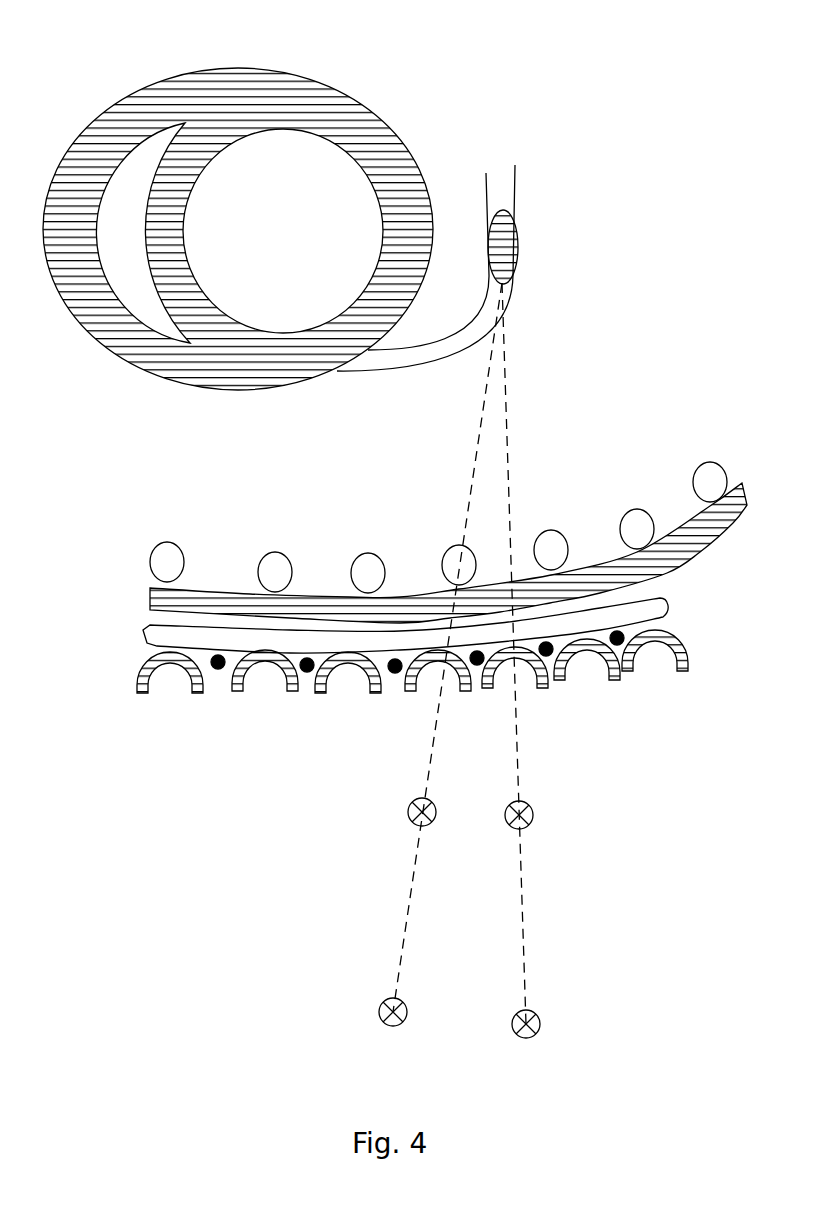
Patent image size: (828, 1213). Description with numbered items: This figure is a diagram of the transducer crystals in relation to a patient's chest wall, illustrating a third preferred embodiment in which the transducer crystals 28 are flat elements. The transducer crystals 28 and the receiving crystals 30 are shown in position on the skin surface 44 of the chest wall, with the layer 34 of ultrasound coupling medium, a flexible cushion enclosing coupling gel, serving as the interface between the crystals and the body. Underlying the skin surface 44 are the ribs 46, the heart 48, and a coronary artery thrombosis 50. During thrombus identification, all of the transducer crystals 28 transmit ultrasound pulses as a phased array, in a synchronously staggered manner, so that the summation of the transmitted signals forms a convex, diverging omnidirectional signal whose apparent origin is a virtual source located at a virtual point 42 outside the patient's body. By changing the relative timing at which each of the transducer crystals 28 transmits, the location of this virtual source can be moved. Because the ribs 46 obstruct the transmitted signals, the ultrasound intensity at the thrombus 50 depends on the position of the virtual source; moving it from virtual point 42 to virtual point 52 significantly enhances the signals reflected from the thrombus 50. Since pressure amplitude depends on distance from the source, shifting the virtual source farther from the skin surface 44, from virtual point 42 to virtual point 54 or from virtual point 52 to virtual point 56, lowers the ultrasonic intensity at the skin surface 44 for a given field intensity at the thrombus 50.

The transducer crystals 28 is at (170, 663).
The receiving crystals 30 is at (307, 667).
The layer of ultrasound coupling medium 34 is at (145, 632).
The virtual point 42 is at (408, 813).
The skin surface 44 is at (670, 608).
The ribs 46 is at (140, 558).
The heart 48 is at (350, 97).
The coronary artery thrombosis 50 is at (518, 257).
The virtual point 52 is at (533, 818).
The virtual point 54 is at (380, 1010).
The virtual point 56 is at (540, 1027).